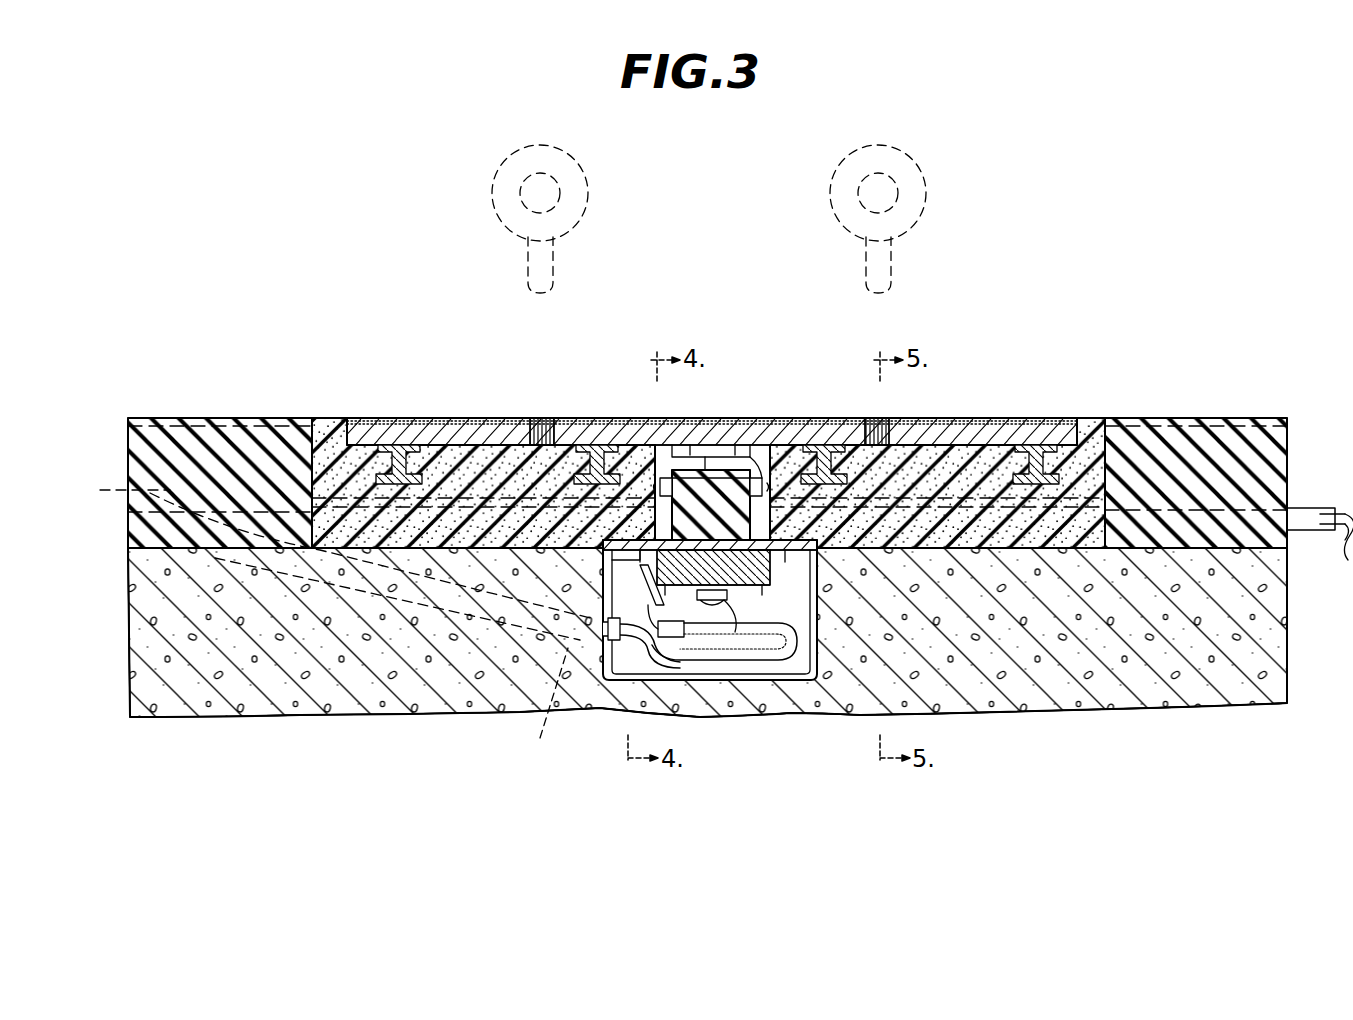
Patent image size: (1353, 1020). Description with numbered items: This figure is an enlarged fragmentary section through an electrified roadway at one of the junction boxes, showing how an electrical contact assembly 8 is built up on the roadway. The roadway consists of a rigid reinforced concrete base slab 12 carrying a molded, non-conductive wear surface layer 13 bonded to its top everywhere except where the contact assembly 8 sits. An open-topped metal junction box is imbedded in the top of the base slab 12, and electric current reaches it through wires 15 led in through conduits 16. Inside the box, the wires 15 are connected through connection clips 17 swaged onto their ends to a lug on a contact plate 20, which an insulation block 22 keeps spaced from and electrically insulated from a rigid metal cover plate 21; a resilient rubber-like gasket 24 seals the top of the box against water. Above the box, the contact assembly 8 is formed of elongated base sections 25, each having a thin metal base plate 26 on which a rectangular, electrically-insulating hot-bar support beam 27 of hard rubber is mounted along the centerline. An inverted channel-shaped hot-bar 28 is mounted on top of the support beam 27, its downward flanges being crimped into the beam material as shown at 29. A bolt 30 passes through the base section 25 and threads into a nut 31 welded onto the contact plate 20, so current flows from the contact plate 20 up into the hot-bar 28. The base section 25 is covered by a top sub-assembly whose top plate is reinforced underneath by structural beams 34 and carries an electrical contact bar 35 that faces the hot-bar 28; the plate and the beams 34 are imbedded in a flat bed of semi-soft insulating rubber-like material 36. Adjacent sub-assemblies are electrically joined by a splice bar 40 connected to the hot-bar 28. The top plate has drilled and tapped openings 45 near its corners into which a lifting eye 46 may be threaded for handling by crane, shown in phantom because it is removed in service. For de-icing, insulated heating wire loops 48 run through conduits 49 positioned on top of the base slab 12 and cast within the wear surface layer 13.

The electrical contact assembly 8 is at (954, 305).
The base slab 12 is at (165, 626).
The wear surface layer 13 is at (1250, 452).
The wires 15 is at (680, 666).
The conduits 16 is at (370, 627).
The connection clips 17 is at (672, 637).
The contact plate 20 is at (728, 597).
The cover plate 21 is at (603, 561).
The insulation block 22 is at (765, 585).
The gasket 24 is at (817, 556).
The base section 25 is at (722, 457).
The base plate 26 is at (656, 445).
The hot-bar support beam 27 is at (780, 460).
The hot-bar 28 is at (662, 445).
The crimped flanges 29 is at (707, 457).
The bolt 30 is at (734, 634).
The nut 31 is at (660, 591).
The beams 34 is at (398, 445).
The electrical contact bar 35 is at (740, 470).
The insulating rubber-like material 36 is at (465, 470).
The splice bar 40 is at (758, 478).
The drilled and tapped openings 45 is at (542, 418).
The lifting eye 46 is at (503, 216).
The heating wire loops 48 is at (1346, 548).
The conduits 49 is at (1320, 486).